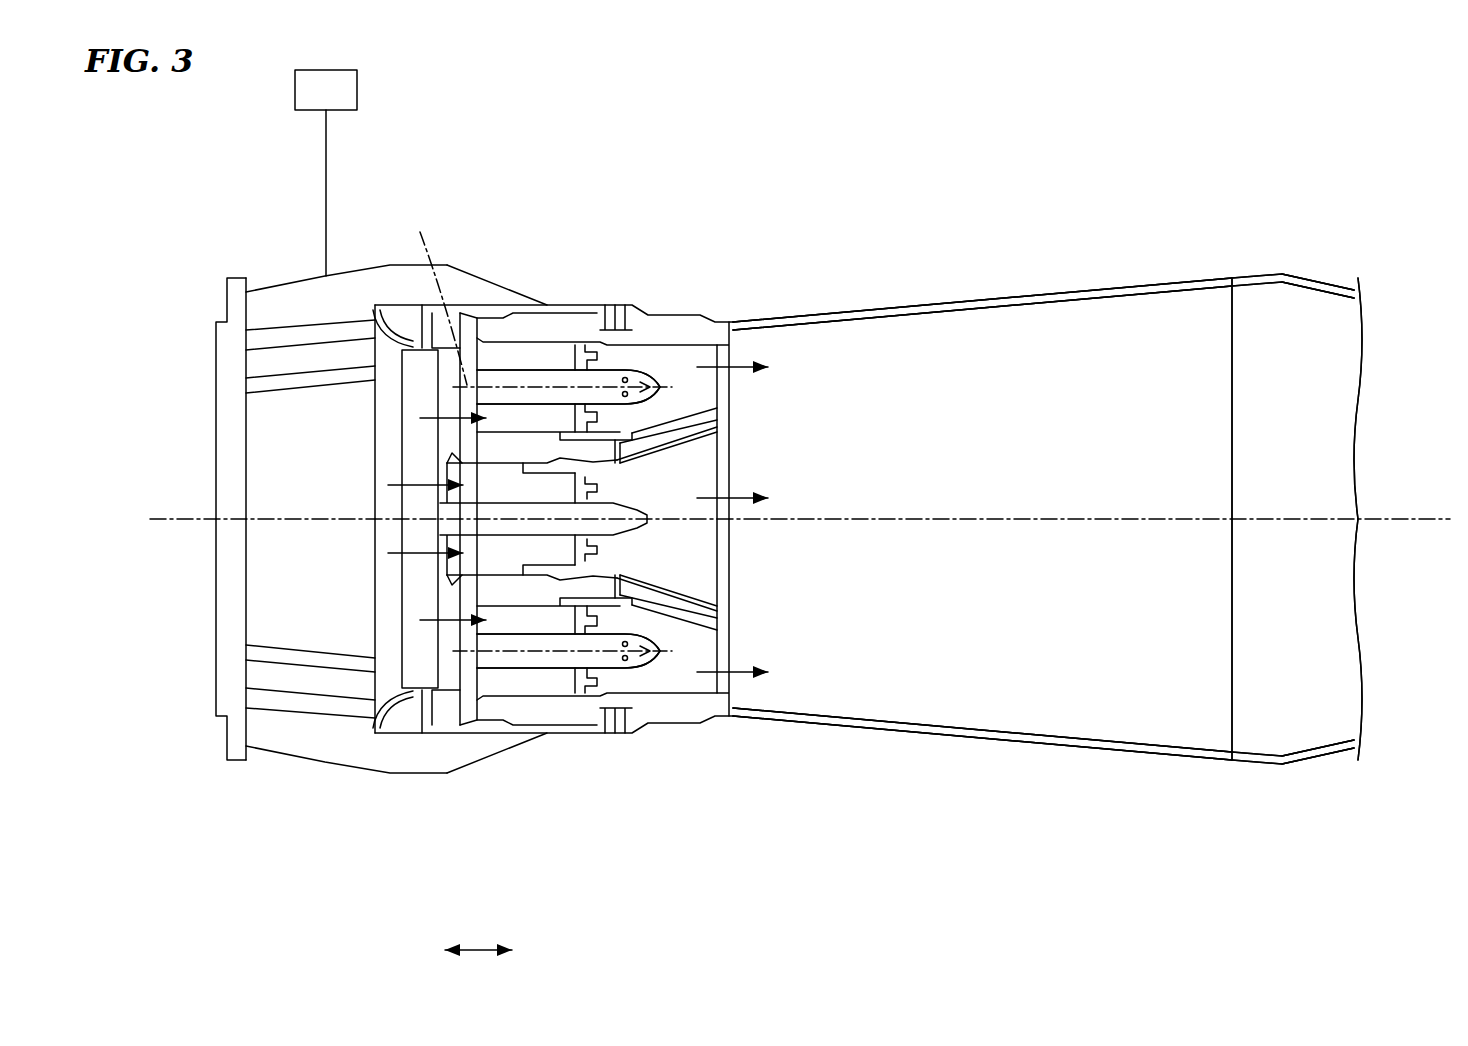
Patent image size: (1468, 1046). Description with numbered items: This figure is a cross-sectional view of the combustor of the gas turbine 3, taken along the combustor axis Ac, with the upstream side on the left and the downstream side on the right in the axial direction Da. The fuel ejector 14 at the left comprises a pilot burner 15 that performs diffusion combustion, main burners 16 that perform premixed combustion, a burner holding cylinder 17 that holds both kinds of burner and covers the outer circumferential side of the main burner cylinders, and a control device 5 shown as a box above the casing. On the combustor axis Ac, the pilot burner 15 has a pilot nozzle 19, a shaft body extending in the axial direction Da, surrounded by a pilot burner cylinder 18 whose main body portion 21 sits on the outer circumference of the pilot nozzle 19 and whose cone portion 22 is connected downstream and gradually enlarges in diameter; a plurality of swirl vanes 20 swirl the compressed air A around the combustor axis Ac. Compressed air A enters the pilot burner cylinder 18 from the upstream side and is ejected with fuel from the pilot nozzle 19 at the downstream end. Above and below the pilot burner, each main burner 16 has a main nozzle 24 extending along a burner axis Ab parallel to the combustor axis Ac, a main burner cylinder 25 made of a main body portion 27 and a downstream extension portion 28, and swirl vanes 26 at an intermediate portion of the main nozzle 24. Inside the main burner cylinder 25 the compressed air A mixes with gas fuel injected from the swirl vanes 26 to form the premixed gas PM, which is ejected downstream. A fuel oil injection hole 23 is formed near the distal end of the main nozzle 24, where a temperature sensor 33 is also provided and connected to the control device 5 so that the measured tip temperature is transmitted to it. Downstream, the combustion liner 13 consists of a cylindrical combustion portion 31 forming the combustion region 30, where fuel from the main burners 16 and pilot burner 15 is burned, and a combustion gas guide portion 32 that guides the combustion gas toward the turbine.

The gas turbine 3 is at (1264, 786).
The control device 5 is at (357, 92).
The combustion liner 13 is at (1181, 268).
The fuel ejector 14 is at (288, 252).
The pilot burner 15 is at (636, 828).
The main burner 16 is at (636, 210).
The burner holding cylinder 17 is at (447, 737).
The pilot burner cylinder 18 is at (572, 600).
The pilot nozzle 19 is at (583, 560).
The swirl vanes 20 is at (588, 565).
The main body portion 21 is at (545, 590).
The cone portion 22 is at (667, 593).
The fuel oil injection hole 23 is at (627, 378).
The main nozzle 24 is at (550, 377).
The main burner cylinder 25 is at (540, 313).
The swirl vanes 26 is at (592, 347).
The main body portion 27 is at (500, 338).
The extension portion 28 is at (680, 335).
The combustion region 30 is at (1050, 300).
The combustion portion 31 is at (985, 300).
The combustion gas guide portion 32 is at (1320, 276).
The temperature sensor 33 is at (662, 383).
The compressed air A is at (388, 483).
The burner axis Ab is at (436, 295).
The combustor axis Ac is at (183, 515).
The premixed gas PM is at (750, 365).
The axial direction Da is at (496, 939).